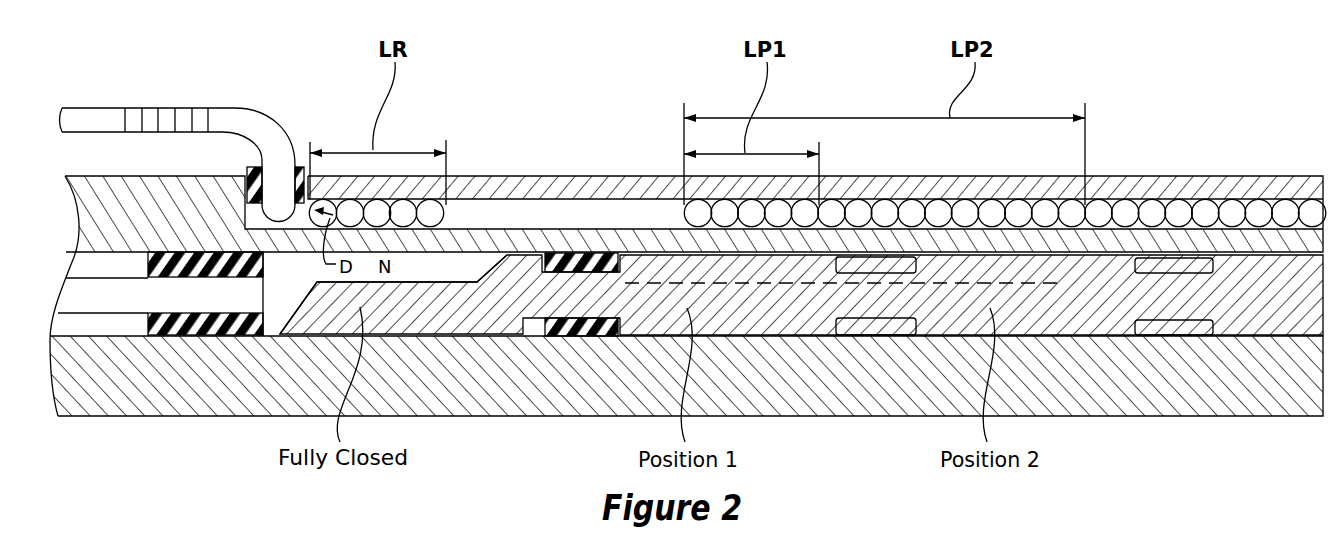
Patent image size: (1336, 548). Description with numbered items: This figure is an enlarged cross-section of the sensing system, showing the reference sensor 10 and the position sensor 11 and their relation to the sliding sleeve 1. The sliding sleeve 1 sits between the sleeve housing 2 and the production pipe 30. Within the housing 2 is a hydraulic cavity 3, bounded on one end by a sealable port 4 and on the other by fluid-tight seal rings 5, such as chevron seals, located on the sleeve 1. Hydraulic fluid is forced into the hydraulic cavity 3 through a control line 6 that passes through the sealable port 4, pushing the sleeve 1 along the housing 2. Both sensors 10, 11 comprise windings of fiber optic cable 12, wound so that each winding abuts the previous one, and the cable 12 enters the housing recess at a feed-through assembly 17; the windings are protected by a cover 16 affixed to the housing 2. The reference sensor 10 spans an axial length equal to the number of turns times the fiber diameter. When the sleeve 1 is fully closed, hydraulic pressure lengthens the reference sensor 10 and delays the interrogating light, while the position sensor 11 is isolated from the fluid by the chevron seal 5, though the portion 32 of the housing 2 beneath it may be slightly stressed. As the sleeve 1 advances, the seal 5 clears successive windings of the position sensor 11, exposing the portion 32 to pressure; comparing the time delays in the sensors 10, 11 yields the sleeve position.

The sliding sleeve 1 is at (512, 293).
The sleeve housing 2 is at (643, 230).
The hydraulic cavity 3 is at (465, 267).
The sealable port 4 is at (190, 320).
The fluid-tight seal rings 5 is at (583, 318).
The control line 6 is at (105, 300).
The reference sensor 10 is at (460, 208).
The position sensor 11 is at (1257, 217).
The fiber optic cable 12 is at (92, 107).
The cover 16 is at (1213, 193).
The feed-through assembly 17 is at (300, 167).
The production pipe 30 is at (130, 393).
The portion of the housing 32 is at (1157, 243).